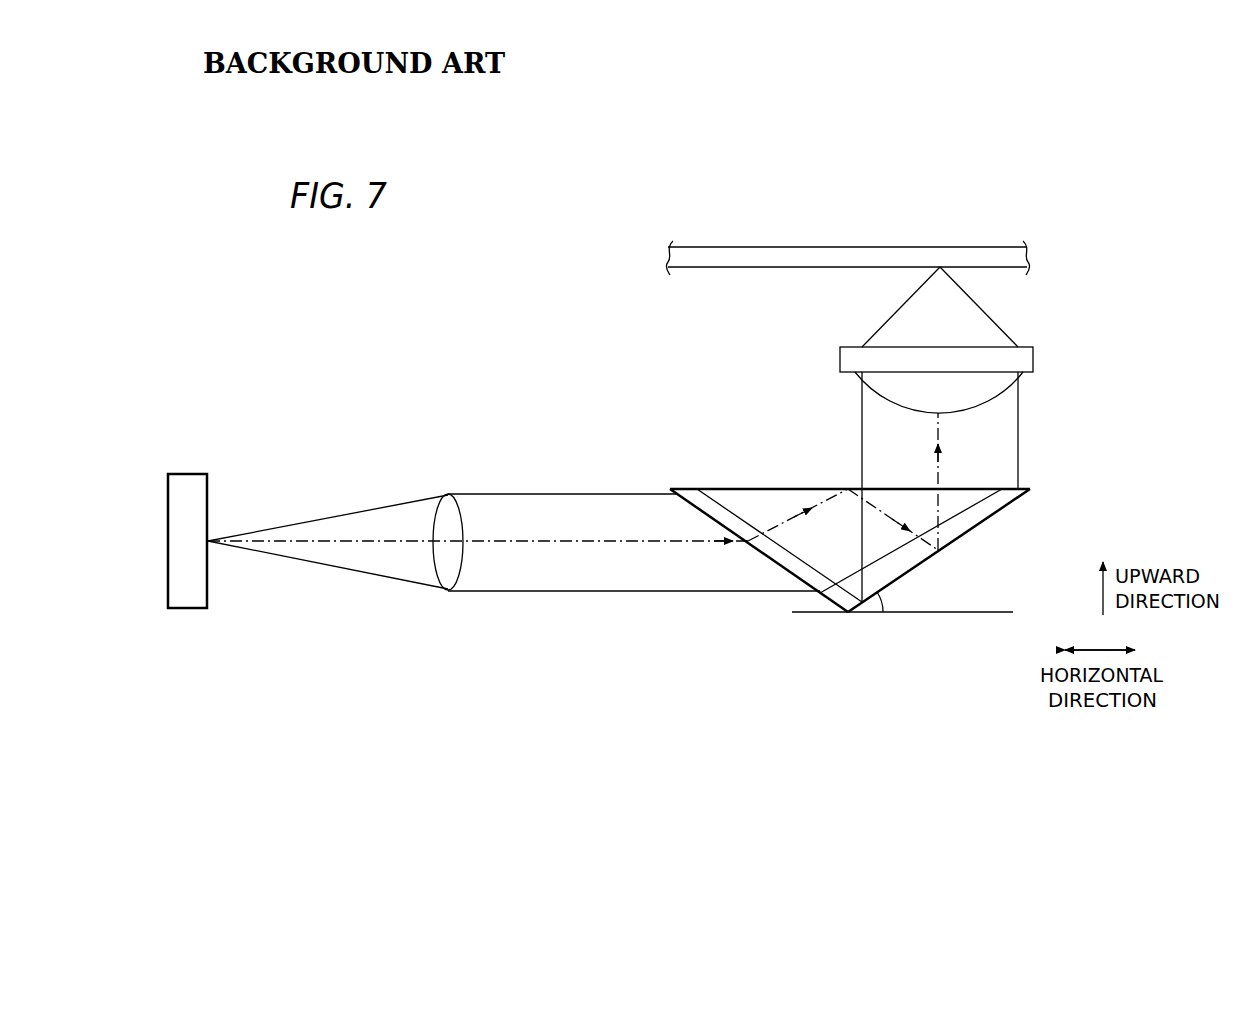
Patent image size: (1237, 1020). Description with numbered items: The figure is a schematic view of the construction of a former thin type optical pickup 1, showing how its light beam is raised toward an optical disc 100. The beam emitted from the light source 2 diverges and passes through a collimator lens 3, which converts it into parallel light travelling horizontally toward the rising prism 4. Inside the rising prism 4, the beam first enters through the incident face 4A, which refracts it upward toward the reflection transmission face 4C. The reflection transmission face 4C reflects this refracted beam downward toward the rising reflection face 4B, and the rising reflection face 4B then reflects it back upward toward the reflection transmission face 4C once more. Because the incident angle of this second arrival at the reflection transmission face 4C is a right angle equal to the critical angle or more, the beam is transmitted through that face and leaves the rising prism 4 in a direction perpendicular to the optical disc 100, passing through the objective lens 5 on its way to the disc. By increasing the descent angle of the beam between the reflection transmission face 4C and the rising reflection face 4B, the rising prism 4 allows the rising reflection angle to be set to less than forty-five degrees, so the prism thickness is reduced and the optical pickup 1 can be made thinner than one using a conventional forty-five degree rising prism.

The optical pickup 1 is at (972, 207).
The optical disc 100 is at (755, 247).
The light source (semiconductor laser) 2 is at (187, 474).
The collimator lens 3 is at (448, 494).
The rising prism 4 is at (850, 547).
The incident face 4A is at (775, 562).
The rising reflection face 4B is at (967, 531).
The reflection transmission face 4C is at (788, 489).
The objective lens 5 is at (840, 355).